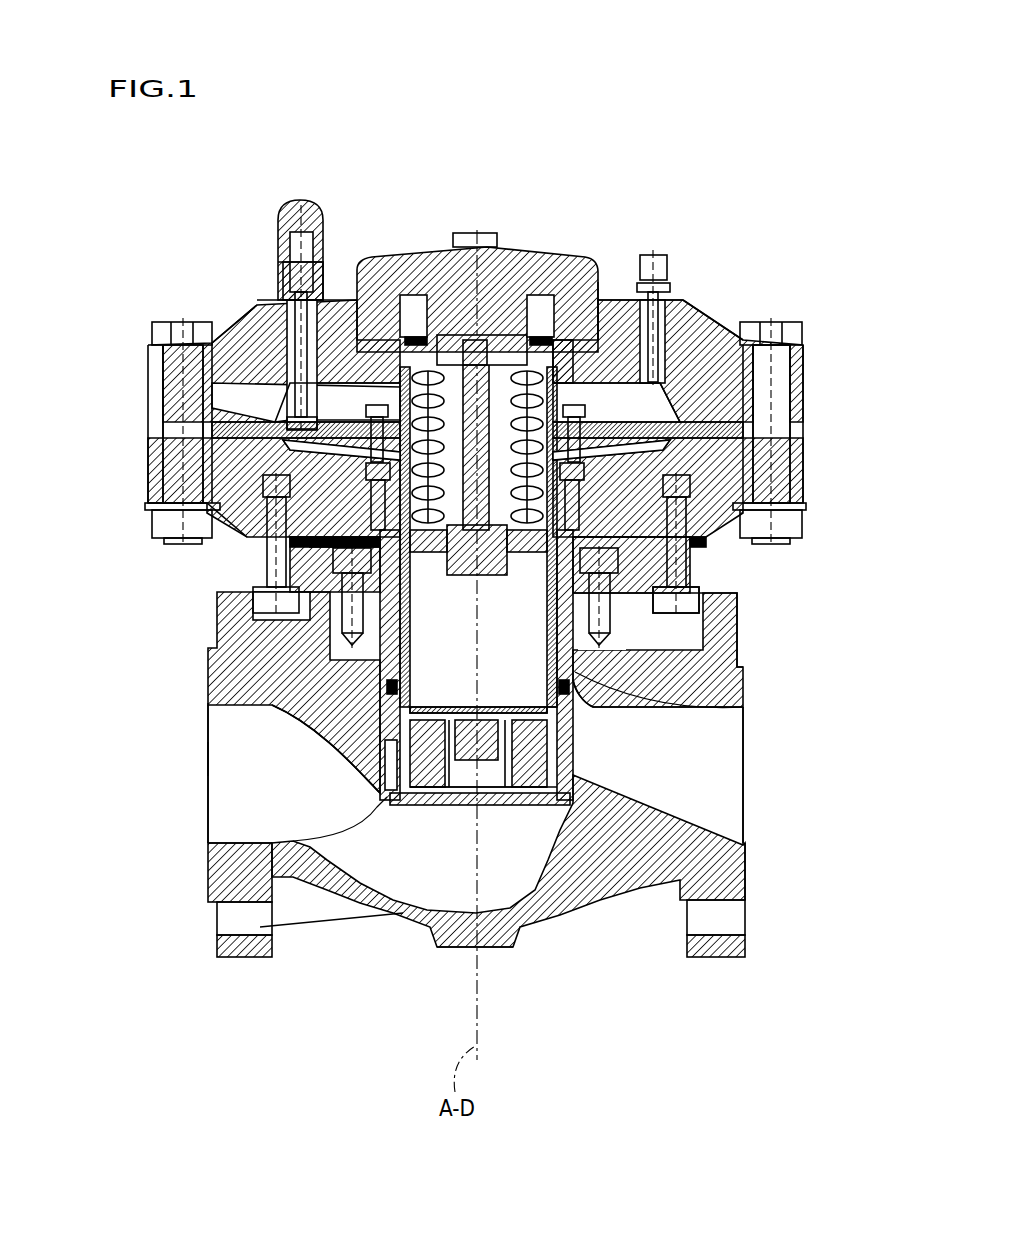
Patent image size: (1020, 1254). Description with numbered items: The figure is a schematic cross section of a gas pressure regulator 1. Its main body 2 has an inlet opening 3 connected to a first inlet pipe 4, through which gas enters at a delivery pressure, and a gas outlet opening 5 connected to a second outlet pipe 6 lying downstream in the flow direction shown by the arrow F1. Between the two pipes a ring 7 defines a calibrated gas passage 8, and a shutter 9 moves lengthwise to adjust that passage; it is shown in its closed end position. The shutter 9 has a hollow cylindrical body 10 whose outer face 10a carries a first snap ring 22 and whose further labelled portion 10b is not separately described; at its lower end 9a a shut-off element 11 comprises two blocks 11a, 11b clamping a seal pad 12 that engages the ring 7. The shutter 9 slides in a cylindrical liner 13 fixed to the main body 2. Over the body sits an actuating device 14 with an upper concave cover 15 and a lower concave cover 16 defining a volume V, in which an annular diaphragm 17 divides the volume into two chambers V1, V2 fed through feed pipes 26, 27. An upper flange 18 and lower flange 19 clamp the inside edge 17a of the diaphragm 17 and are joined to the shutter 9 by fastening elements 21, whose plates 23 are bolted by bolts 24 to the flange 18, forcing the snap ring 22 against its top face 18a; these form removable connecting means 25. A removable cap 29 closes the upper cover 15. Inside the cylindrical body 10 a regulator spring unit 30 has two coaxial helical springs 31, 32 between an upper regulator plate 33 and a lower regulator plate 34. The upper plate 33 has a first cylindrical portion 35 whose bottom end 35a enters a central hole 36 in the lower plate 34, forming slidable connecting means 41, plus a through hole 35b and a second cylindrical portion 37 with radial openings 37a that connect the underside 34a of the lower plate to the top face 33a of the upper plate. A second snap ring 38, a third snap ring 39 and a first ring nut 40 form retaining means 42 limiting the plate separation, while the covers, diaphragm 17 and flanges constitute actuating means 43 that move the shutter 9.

The gas pressure regulator 1 is at (562, 128).
The main body 2 is at (335, 665).
The inlet opening 3 is at (205, 722).
The first inlet pipe 4 is at (225, 805).
The gas outlet opening 5 is at (750, 845).
The second outlet pipe 6 is at (727, 813).
The ring 7 is at (208, 852).
The calibrated gas passage 8 is at (447, 940).
The shutter 9 is at (460, 793).
The lower end 9a is at (212, 744).
The hollow cylindrical body 10 is at (300, 612).
The outer face 10a is at (357, 265).
The body upper flange 10b is at (620, 608).
The shut-off element 11 is at (427, 793).
The block 11a is at (560, 778).
The block 11b is at (575, 737).
The seal pad 12 is at (552, 800).
The cylindrical liner 13 is at (690, 665).
The actuating device 14 is at (737, 318).
The upper concave cover 15 is at (655, 252).
The lower concave cover 16 is at (700, 567).
The annular diaphragm 17 is at (212, 375).
The inside edge 17a is at (216, 414).
The upper flange 18 is at (162, 352).
The top face 18a is at (300, 352).
The lower flange 19 is at (372, 440).
The fastening elements 21 is at (272, 300).
The first snap ring 22 is at (355, 300).
The plates 23 is at (300, 202).
The bolts 24 is at (278, 265).
The removable connecting means 25 is at (272, 350).
The feed pipe 26 is at (700, 530).
The feed pipe 27 is at (712, 215).
The removable cap 29 is at (598, 282).
The regulator spring unit 30 is at (487, 916).
The helical spring 31 is at (372, 470).
The helical spring 32 is at (474, 233).
The upper regulator plate 33 is at (432, 300).
The top face 33a is at (410, 330).
The lower regulator plate 34 is at (330, 483).
The underside 34a is at (290, 500).
The first cylindrical portion 35 is at (720, 490).
The bottom end 35a is at (385, 747).
The through hole 35b is at (500, 330).
The central hole 36 is at (600, 712).
The second cylindrical portion 37 is at (505, 335).
The radial openings 37a is at (570, 340).
The second snap ring 38 is at (700, 640).
The third snap ring 39 is at (404, 330).
The first ring nut 40 is at (333, 560).
The slidable connecting means 41 is at (618, 650).
The retaining means 42 is at (383, 330).
The actuating means 43 is at (182, 322).
The delimited volume V is at (597, 258).
The chamber V1 is at (720, 452).
The chamber V2 is at (720, 407).
The arrow F1 is at (224, 768).